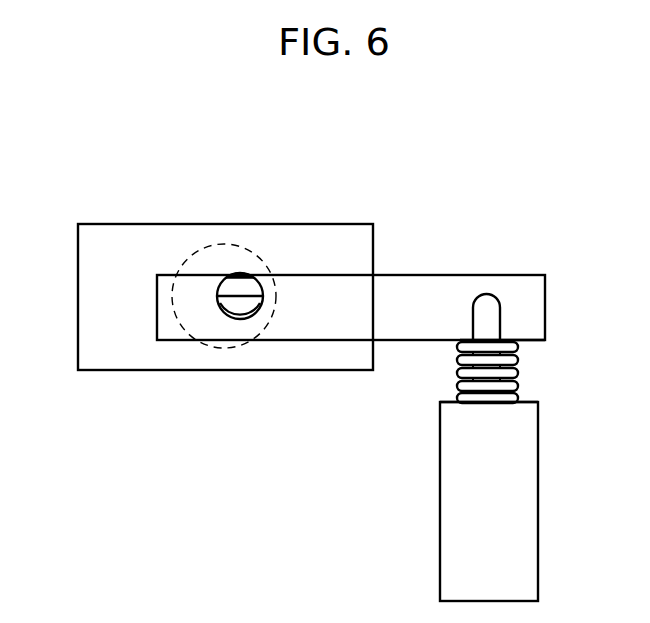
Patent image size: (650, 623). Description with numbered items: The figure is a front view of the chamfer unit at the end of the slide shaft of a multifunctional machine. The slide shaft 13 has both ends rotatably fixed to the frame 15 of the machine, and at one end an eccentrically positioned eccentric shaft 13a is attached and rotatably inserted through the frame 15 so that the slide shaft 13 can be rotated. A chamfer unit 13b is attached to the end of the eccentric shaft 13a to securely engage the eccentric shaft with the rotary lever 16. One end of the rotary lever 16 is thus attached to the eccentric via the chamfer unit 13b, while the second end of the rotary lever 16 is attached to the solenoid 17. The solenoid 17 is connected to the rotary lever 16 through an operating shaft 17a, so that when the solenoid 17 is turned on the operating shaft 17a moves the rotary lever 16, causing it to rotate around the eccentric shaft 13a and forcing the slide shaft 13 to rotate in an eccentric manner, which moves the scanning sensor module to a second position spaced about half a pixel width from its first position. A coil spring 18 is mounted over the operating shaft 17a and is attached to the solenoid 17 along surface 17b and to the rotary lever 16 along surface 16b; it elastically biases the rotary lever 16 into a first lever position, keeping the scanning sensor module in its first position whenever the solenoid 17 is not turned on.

The slide shaft 13 is at (197, 262).
The eccentric shaft 13a is at (240, 273).
The chamfer unit 13b is at (238, 319).
The frame 15 is at (90, 336).
The rotary lever 16 is at (415, 285).
The surface of rotary lever 16b is at (460, 338).
The solenoid 17 is at (520, 498).
The operating shaft 17a is at (493, 315).
The surface of solenoid 17b is at (527, 403).
The coil spring 18 is at (518, 373).